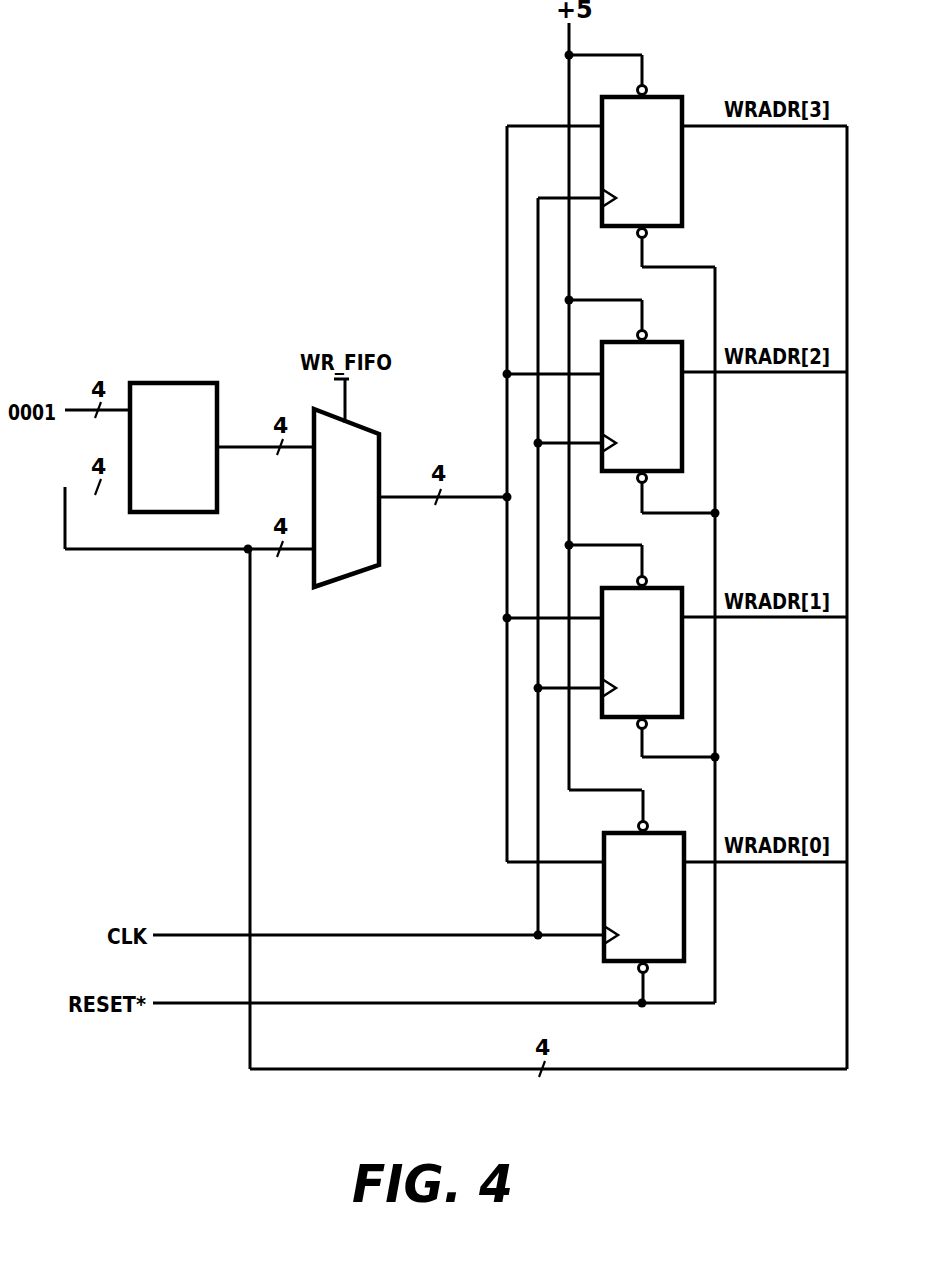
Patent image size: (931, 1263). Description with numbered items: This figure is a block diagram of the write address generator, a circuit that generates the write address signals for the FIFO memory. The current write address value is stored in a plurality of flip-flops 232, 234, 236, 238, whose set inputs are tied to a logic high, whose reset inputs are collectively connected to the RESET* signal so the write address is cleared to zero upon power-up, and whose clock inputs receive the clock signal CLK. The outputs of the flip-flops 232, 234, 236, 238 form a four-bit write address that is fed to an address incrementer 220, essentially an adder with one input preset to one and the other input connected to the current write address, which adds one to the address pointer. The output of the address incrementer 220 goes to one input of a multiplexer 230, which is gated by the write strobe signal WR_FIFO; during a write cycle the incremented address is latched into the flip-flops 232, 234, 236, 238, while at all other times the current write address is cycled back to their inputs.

The address incrementer 220 is at (170, 383).
The multiplexer 230 is at (357, 568).
The flip-flop 232 is at (684, 200).
The flip-flop 234 is at (684, 445).
The flip-flop 236 is at (684, 690).
The flip-flop 238 is at (686, 937).